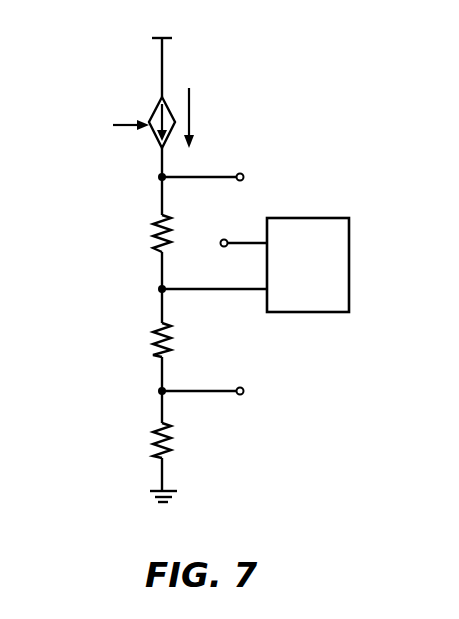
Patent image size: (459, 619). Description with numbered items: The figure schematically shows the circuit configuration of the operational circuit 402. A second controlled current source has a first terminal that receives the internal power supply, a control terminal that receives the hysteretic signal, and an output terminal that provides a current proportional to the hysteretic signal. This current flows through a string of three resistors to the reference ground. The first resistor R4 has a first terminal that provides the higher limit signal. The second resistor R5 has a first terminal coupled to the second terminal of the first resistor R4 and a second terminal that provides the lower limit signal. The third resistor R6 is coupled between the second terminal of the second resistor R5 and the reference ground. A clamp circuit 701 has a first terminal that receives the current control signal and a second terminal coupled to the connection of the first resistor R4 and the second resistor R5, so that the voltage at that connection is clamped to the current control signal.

The operational circuit 402 is at (286, 54).
The clamp circuit 701 is at (290, 312).
The first resistor R4 is at (141, 233).
The second resistor R5 is at (141, 340).
The third resistor R6 is at (145, 440).